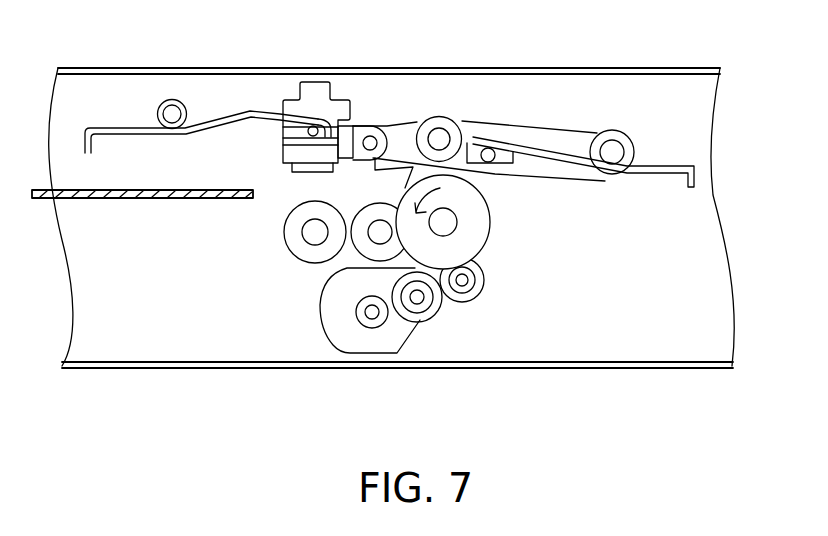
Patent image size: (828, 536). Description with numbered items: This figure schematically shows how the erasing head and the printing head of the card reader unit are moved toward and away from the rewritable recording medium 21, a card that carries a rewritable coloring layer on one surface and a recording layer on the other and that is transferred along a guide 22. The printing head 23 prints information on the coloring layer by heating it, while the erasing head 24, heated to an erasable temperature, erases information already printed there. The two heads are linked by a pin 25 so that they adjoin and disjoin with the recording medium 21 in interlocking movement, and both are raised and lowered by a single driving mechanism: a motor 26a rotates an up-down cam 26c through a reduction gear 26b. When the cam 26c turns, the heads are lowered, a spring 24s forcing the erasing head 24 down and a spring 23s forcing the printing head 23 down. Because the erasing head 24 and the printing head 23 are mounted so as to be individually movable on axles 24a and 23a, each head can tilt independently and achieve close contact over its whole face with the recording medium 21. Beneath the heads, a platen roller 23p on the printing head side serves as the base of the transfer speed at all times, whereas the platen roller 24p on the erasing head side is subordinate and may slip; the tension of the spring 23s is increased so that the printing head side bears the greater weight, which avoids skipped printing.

The rewritable recording medium 21 is at (137, 198).
The conveying guide frame 22 is at (586, 67).
The printing head 23 is at (376, 175).
The axle 23a is at (441, 137).
The platen roller 23p is at (366, 252).
The spring 23s is at (647, 173).
The erasing head 24 is at (283, 153).
The axle 24a is at (309, 127).
The platen roller 24p is at (290, 243).
The spring 24s is at (118, 128).
The pin 25 is at (371, 141).
The motor 26a is at (343, 325).
The reduction gear 26b is at (430, 312).
The up-down cam 26c is at (475, 222).